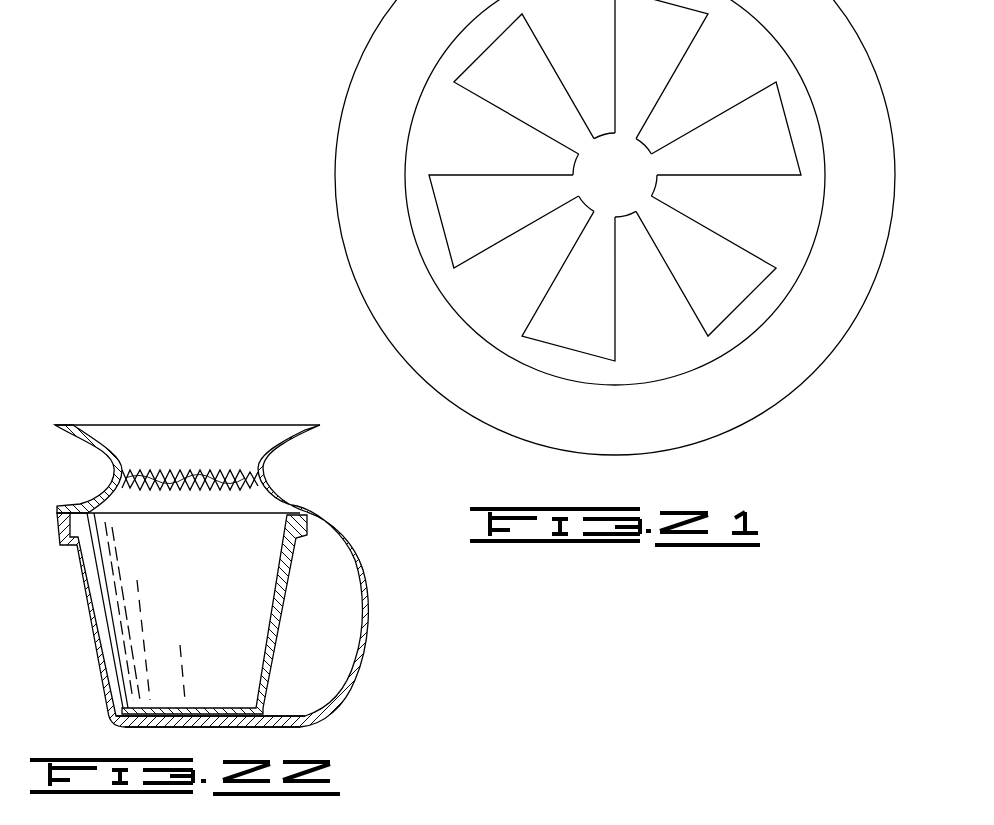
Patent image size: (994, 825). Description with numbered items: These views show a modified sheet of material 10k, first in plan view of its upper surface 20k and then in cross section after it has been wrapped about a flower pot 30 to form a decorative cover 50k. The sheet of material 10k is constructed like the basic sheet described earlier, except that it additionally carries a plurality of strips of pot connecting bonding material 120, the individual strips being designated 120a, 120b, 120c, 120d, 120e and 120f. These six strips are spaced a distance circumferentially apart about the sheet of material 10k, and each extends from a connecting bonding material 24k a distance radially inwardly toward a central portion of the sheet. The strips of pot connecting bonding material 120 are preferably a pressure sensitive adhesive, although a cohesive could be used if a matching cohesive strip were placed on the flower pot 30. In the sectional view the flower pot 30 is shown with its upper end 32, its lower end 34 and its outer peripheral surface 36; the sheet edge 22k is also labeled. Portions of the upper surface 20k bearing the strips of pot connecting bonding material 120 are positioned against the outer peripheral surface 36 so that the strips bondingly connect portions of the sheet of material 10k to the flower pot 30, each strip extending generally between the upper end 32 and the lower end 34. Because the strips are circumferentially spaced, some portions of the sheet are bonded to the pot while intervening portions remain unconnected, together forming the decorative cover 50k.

In FIG. 21, the strips of pot connecting bonding material 120 is at (407, 71).
In FIG. 21, the strip of pot connecting bonding material 120a is at (457, 132).
In FIG. 21, the strip of pot connecting bonding material 120b is at (598, 31).
In FIG. 21, the strip of pot connecting bonding material 120c is at (697, 97).
In FIG. 21, the strip of pot connecting bonding material 120d is at (769, 228).
In FIG. 21, the strip of pot connecting bonding material 120e is at (637, 305).
In FIG. 21, the strip of pot connecting bonding material 120f is at (533, 233).
In FIG. 21, the connecting bonding material 24k is at (758, 320).
In FIG. 22, the sheet of material 10k is at (276, 579).
In FIG. 22, the upper end 32 is at (297, 515).
In FIG. 22, the outer peripheral surface 36 is at (290, 562).
In FIG. 22, the upper surface 20k is at (252, 579).
In FIG. 22, the decorative cover 50k is at (382, 627).
In FIG. 22, the flower pot 30 is at (239, 613).
In FIG. 22, the side wall 22k is at (347, 672).
In FIG. 22, the lower end 34 is at (300, 709).